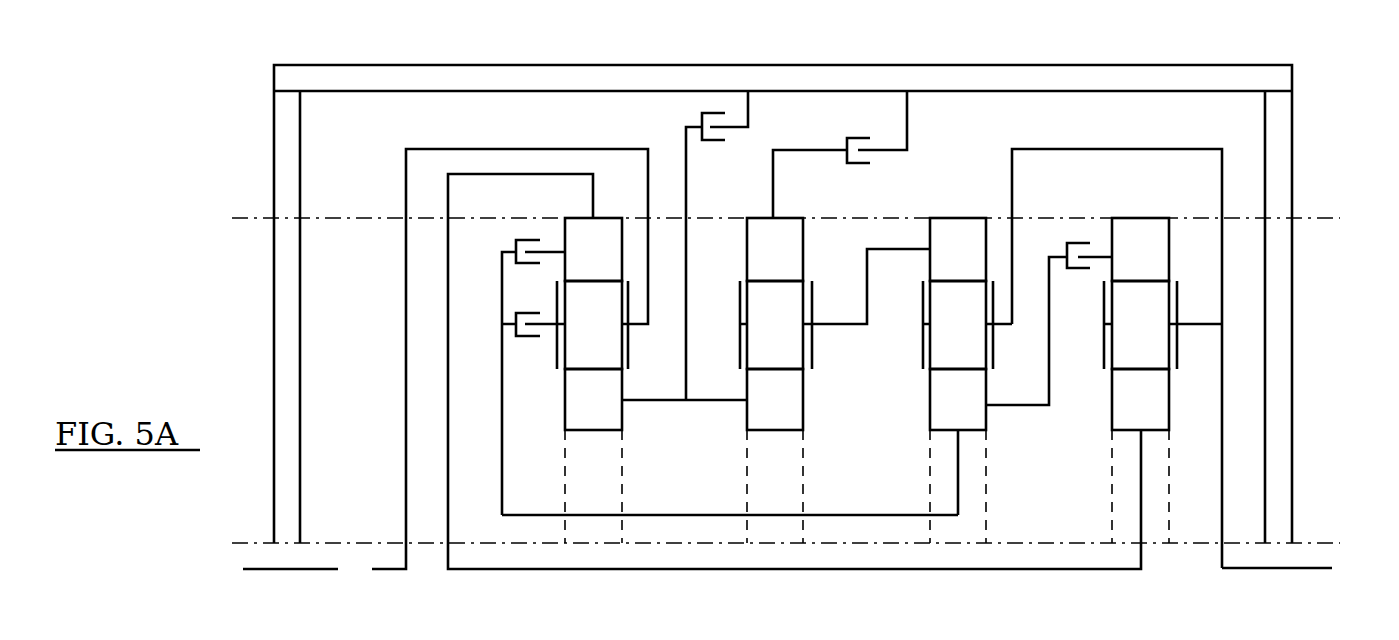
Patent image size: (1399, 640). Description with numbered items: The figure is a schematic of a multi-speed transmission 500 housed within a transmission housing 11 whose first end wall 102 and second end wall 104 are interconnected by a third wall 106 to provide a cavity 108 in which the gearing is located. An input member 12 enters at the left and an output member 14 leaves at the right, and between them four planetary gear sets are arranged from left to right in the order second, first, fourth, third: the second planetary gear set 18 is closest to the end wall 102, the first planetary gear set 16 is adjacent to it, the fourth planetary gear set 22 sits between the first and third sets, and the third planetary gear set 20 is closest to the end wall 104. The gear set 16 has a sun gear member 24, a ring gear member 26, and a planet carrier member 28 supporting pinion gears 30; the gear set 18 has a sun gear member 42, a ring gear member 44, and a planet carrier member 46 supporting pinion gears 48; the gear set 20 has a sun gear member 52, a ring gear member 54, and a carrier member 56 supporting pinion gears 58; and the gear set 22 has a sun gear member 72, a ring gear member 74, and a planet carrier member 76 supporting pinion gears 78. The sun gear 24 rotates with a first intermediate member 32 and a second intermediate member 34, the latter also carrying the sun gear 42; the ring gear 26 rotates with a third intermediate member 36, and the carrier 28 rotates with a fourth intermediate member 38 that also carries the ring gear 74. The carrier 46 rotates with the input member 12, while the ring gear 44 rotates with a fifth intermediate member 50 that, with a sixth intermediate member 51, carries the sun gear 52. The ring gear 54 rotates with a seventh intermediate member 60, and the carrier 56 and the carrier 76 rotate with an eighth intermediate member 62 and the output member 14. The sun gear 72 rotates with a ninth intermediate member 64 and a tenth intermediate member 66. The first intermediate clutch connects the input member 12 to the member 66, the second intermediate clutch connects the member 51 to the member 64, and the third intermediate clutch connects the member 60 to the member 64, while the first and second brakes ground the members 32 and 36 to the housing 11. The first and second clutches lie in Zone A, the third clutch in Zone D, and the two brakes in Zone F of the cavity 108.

The transmission housing 11 is at (998, 54).
The multi-speed transmission 500 is at (1319, 113).
The input shaft or member 12 is at (392, 567).
The output shaft or member 14 is at (1310, 563).
The first planetary gear set 16 is at (735, 420).
The second planetary gear set 18 is at (546, 417).
The third planetary gear set 20 is at (1123, 456).
The fourth planetary gear set 22 is at (946, 456).
The sun gear member 24 is at (775, 399).
The ring gear member 26 is at (775, 249).
The planet carrier member 28 is at (738, 305).
The pinion gears 30 is at (775, 325).
The first shaft or intermediate member 32 is at (688, 325).
The second shaft or intermediate member 34 is at (648, 400).
The third shaft or intermediate member 36 is at (777, 173).
The fourth shaft or intermediate member 38 is at (863, 280).
The sun gear member 42 is at (593, 399).
The ring gear member 44 is at (593, 249).
The planet carrier member 46 is at (556, 360).
The pinion gears 48 is at (593, 325).
The fifth shaft or intermediate member 50 is at (708, 569).
The sixth shaft or intermediate member 51 is at (560, 252).
The sun gear member 52 is at (1140, 399).
The ring gear member 54 is at (1140, 249).
The carrier member 56 is at (1177, 297).
The pinion gears 58 is at (1140, 325).
The seventh shaft or intermediate member 60 is at (1100, 252).
The eighth shaft or intermediate member 62 is at (1037, 149).
The ninth shaft or intermediate member 64 is at (502, 373).
The tenth shaft or intermediate member 66 is at (772, 512).
The sun gear member 72 is at (958, 399).
The ring gear member 74 is at (958, 249).
The planet carrier member 76 is at (922, 338).
The pinion gears 78 is at (958, 325).
The first end wall 102 is at (290, 137).
The second end wall 104 is at (1280, 270).
The third wall 106 is at (492, 75).
The cavity 108 is at (1116, 113).